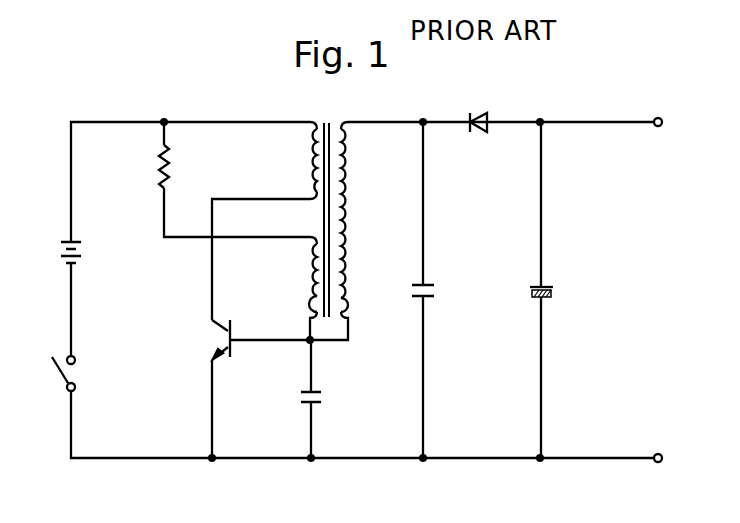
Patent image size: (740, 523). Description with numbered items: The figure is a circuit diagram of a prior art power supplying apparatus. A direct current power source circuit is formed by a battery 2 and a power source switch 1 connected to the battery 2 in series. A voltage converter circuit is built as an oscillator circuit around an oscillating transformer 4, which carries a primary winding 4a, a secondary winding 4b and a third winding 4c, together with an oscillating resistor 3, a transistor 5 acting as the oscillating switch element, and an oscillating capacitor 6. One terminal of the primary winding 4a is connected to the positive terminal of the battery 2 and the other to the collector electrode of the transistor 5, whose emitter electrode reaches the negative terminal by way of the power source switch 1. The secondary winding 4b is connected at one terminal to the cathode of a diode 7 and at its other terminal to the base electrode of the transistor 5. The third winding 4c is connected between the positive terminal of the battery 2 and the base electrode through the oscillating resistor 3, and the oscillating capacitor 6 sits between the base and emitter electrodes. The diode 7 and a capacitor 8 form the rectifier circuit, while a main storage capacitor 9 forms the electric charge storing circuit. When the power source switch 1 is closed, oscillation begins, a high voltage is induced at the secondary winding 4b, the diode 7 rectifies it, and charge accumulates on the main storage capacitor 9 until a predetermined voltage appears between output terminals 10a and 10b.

The power source switch 1 is at (72, 378).
The battery 2 is at (78, 238).
The oscillating resistor 3 is at (158, 170).
The oscillating transformer 4 is at (328, 193).
The primary winding 4a is at (302, 170).
The secondary winding 4b is at (385, 210).
The third winding 4c is at (305, 297).
The transistor 5 is at (215, 336).
The oscillating capacitor 6 is at (321, 401).
The diode 7 is at (478, 113).
The capacitor 8 is at (430, 297).
The main storage capacitor 9 is at (545, 300).
The output terminal 10a is at (657, 118).
The output terminal 10b is at (657, 464).